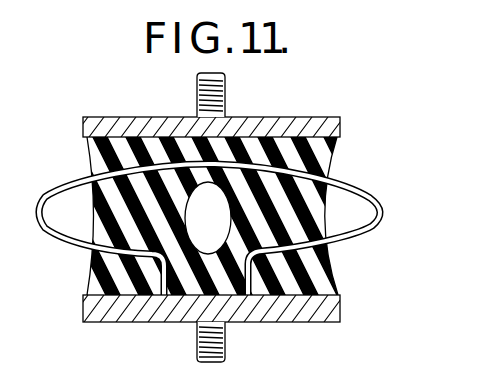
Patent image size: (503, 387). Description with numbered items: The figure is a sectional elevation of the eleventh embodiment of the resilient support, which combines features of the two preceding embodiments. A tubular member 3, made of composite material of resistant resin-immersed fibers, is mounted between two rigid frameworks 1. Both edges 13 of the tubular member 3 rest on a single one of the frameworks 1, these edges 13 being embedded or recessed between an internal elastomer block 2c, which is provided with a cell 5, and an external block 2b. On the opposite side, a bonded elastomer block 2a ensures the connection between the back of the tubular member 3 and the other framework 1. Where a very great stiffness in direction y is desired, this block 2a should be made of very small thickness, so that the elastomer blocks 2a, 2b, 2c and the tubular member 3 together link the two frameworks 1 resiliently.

The framework 1 is at (243, 120).
The bonded elastomer block 2a is at (306, 157).
The external block 2b is at (314, 284).
The internal elastomer block 2c is at (312, 222).
The tubular member 3 is at (56, 190).
The cell 5 is at (218, 237).
The edges 13 is at (212, 300).